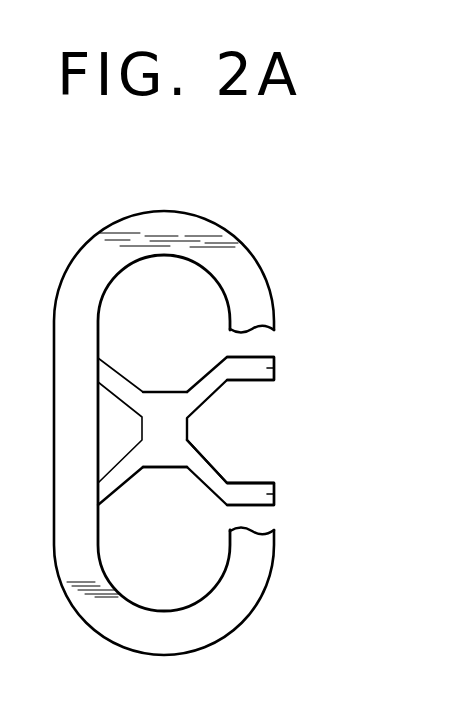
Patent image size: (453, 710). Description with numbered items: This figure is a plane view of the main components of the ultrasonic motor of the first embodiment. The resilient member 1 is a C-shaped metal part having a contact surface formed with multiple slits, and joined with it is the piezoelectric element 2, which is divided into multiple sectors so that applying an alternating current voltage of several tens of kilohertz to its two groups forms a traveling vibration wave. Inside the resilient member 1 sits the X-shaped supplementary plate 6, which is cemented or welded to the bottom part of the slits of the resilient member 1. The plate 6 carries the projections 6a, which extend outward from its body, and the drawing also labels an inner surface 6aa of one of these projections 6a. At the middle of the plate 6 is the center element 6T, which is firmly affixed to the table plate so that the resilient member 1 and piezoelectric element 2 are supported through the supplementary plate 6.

The resilient member 1 is at (263, 267).
The piezoelectric element 2 is at (238, 242).
The X-shaped supplementary plate 6 is at (182, 351).
The projections 6a is at (275, 368).
The inner surface of arm 6aa is at (210, 468).
The center element 6T is at (160, 460).